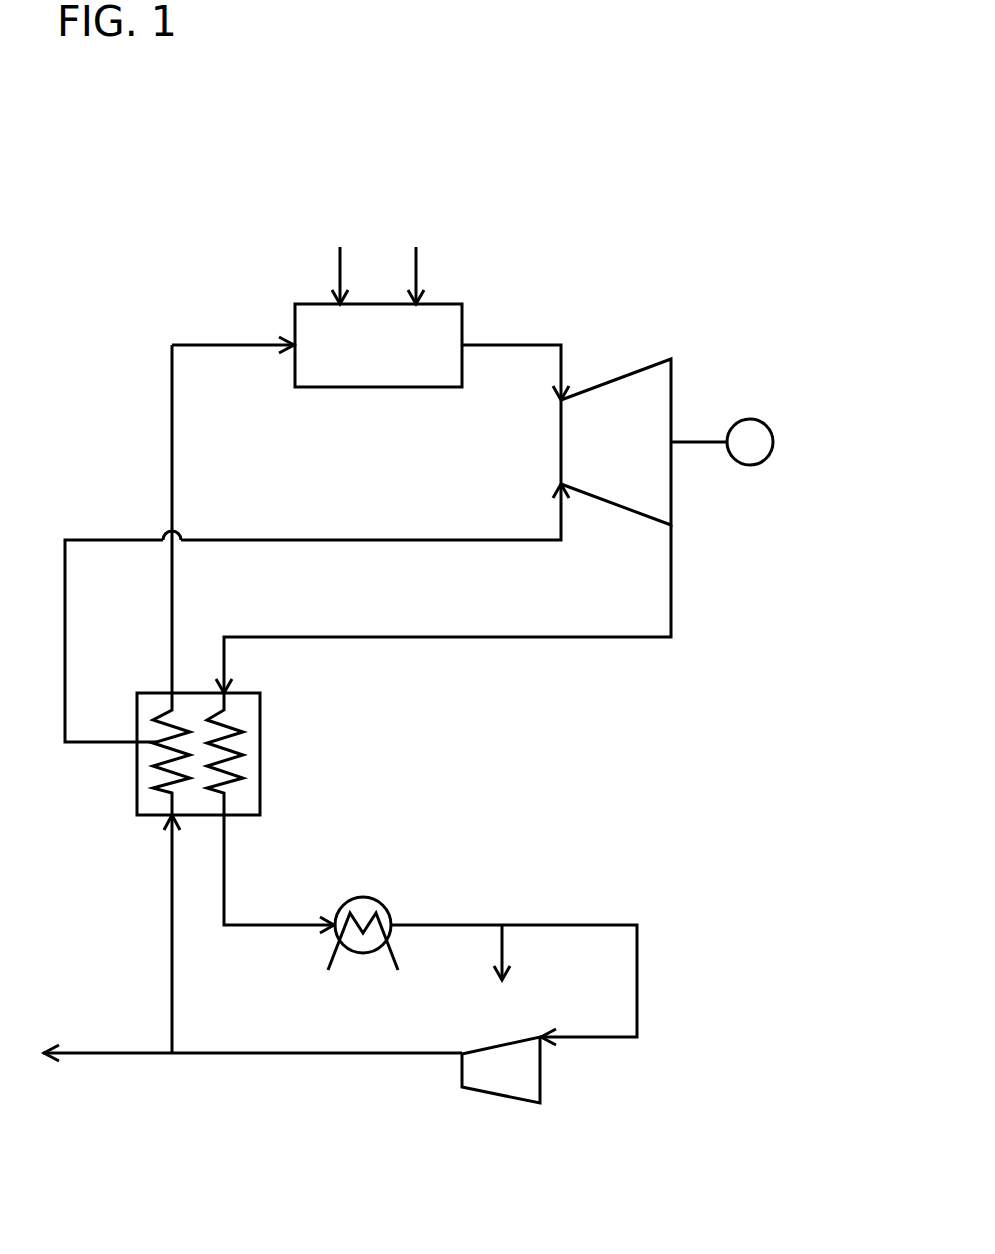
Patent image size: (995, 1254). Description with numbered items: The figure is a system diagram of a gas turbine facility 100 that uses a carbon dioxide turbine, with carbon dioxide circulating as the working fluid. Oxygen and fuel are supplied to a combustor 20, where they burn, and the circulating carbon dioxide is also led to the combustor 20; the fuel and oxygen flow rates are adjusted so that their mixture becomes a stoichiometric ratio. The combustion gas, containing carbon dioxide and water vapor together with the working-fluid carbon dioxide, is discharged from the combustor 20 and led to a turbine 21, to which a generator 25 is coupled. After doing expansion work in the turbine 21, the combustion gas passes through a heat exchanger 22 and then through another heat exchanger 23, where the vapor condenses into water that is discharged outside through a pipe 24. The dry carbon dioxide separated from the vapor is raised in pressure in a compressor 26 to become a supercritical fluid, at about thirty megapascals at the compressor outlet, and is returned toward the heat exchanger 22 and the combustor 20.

The gas turbine facility 100 is at (621, 203).
The combustor 20 is at (447, 304).
The turbine 21 is at (612, 378).
The heat exchanger 22 is at (261, 750).
The heat exchanger 23 is at (360, 898).
The pipe 24 is at (504, 947).
The generator 25 is at (748, 420).
The compressor 26 is at (542, 1070).